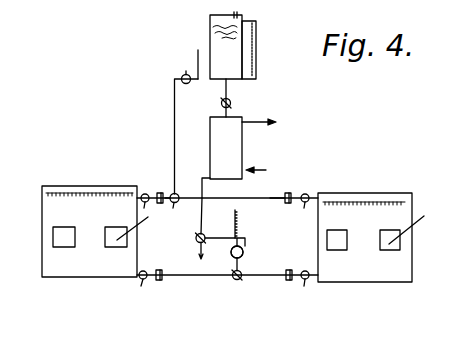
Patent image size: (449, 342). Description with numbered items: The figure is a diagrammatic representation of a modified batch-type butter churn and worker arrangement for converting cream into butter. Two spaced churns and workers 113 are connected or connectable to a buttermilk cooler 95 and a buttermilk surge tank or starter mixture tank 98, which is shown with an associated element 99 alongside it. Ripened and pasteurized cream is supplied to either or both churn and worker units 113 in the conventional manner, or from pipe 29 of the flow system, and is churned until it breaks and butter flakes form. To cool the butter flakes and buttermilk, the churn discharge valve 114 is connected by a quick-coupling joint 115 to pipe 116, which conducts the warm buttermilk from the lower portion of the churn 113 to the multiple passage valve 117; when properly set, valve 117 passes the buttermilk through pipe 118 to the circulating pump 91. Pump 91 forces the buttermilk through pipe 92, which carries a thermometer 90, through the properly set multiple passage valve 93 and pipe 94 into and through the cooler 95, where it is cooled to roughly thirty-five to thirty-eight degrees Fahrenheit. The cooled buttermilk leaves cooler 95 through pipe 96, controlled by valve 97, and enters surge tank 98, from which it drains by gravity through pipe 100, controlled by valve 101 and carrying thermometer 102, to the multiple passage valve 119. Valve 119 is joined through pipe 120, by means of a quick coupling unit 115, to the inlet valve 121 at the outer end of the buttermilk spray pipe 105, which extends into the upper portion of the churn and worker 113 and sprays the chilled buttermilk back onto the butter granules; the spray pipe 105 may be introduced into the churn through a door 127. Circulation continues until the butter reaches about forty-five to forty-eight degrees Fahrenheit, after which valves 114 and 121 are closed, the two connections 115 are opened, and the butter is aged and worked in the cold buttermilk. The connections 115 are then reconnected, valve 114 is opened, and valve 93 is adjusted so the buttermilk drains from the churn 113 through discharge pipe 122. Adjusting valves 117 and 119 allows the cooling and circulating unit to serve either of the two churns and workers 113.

The pipe 29 is at (131, 228).
The thermometer 90 is at (237, 223).
The circulating pump 91 is at (245, 250).
The pipe 92 is at (245, 238).
The multiple passage valve 93 is at (196, 239).
The pipe 94 is at (200, 213).
The buttermilk cooler 95 is at (233, 147).
The pipe 96 is at (222, 105).
The valve 97 is at (230, 103).
The buttermilk surge tank 98 is at (210, 23).
The gauge 99 is at (256, 38).
The pipe 100 is at (174, 117).
The valve 101 is at (182, 77).
The thermometer 102 is at (198, 60).
The buttermilk spray pipe 105 is at (70, 193).
The churn and worker 113 is at (63, 277).
The churn discharge valve 114 is at (141, 280).
The quick-coupling joint 115 is at (158, 193).
The pipe 116 is at (198, 277).
The multiple passage valve 117 is at (240, 282).
The pipe 118 is at (240, 262).
The multiple passage valve 119 is at (176, 193).
The pipe 120 is at (167, 193).
The inlet valve 121 is at (140, 197).
The discharge pipe 122 is at (196, 251).
The door 127 is at (110, 248).